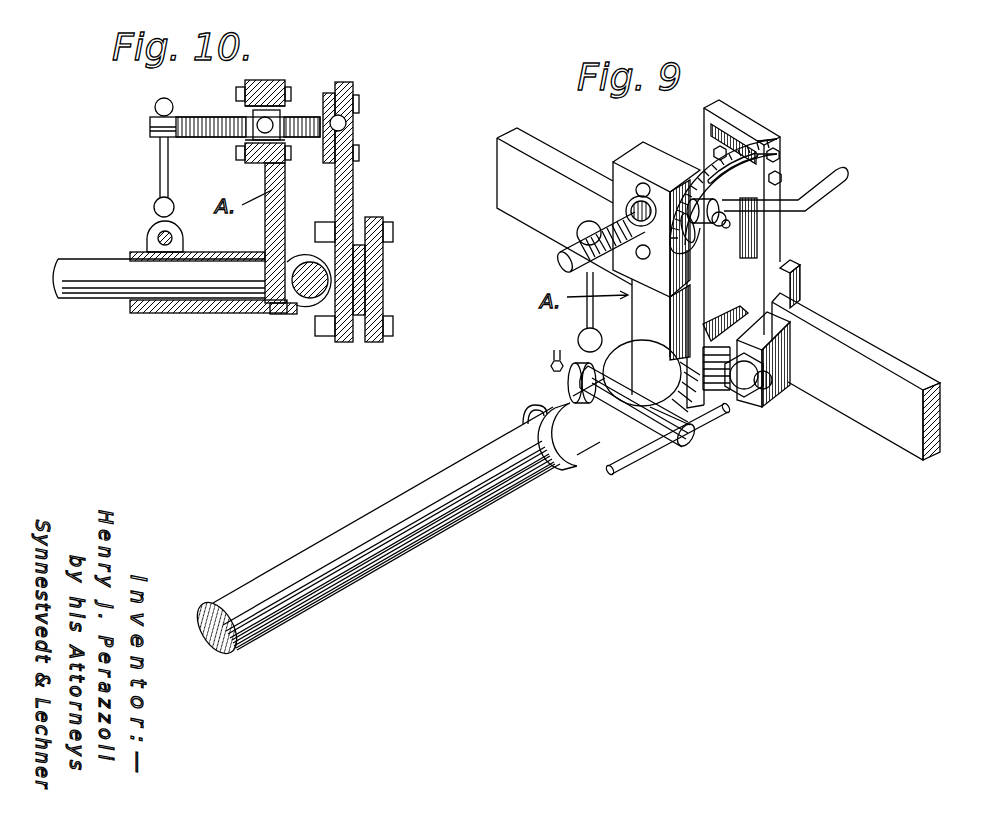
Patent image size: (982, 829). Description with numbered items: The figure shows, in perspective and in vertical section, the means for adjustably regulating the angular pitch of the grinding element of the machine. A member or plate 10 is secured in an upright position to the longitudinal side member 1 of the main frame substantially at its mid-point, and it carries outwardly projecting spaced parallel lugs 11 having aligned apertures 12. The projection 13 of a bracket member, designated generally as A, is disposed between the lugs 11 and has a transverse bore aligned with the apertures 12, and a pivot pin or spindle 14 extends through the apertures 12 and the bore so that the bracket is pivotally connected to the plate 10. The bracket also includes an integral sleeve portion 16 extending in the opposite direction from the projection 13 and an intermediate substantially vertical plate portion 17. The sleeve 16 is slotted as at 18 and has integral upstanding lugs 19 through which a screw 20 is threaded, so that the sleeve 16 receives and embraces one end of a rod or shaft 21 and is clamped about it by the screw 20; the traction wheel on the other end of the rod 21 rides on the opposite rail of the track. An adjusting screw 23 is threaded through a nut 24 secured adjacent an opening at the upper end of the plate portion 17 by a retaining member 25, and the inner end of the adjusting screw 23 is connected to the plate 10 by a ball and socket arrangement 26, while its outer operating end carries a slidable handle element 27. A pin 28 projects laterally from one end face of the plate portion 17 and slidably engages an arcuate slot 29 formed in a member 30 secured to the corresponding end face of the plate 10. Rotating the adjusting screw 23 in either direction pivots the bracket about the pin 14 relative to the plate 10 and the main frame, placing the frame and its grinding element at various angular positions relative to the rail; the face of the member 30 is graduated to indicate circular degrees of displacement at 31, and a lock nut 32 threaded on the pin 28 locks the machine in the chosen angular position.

In FIG. 10, the longitudinal side member 1 is at (370, 287).
In FIG. 9, the longitudinal side member 1 is at (866, 346).
In FIG. 10, the plate 10 is at (346, 190).
In FIG. 9, the plate 10 is at (770, 238).
In FIG. 10, the lugs 11 is at (333, 292).
In FIG. 9, the lugs 11 is at (736, 392).
In FIG. 10, the apertures 12 is at (298, 262).
In FIG. 10, the projection 13 is at (323, 288).
In FIG. 9, the projection 13 is at (717, 334).
In FIG. 10, the pivot pin 14 is at (305, 283).
In FIG. 9, the pivot pin 14 is at (764, 388).
In FIG. 10, the sleeve portion 16 is at (187, 307).
In FIG. 9, the sleeve portion 16 is at (590, 455).
In FIG. 10, the plate portion 17 is at (273, 218).
In FIG. 9, the plate portion 17 is at (650, 313).
In FIG. 10, the slot 18 is at (143, 257).
In FIG. 9, the slot 18 is at (527, 405).
In FIG. 10, the upstanding lugs 19 is at (153, 234).
In FIG. 9, the upstanding lugs 19 is at (565, 378).
In FIG. 10, the screw 20 is at (173, 238).
In FIG. 9, the screw 20 is at (551, 364).
In FIG. 10, the rod 21 is at (100, 290).
In FIG. 9, the rod 21 is at (445, 512).
In FIG. 10, the adjusting screw 23 is at (193, 116).
In FIG. 9, the adjusting screw 23 is at (560, 249).
In FIG. 10, the nut 24 is at (258, 130).
In FIG. 9, the nut 24 is at (627, 207).
In FIG. 10, the retaining member 25 is at (255, 122).
In FIG. 10, the ball and socket arrangement 26 is at (357, 118).
In FIG. 10, the handle element 27 is at (158, 168).
In FIG. 9, the handle element 27 is at (585, 287).
In FIG. 9, the pin 28 is at (726, 228).
In FIG. 9, the arcuate slot 29 is at (746, 165).
In FIG. 9, the member 30 is at (710, 172).
In FIG. 9, the graduations 31 is at (746, 150).
In FIG. 9, the lock nut 32 is at (812, 204).